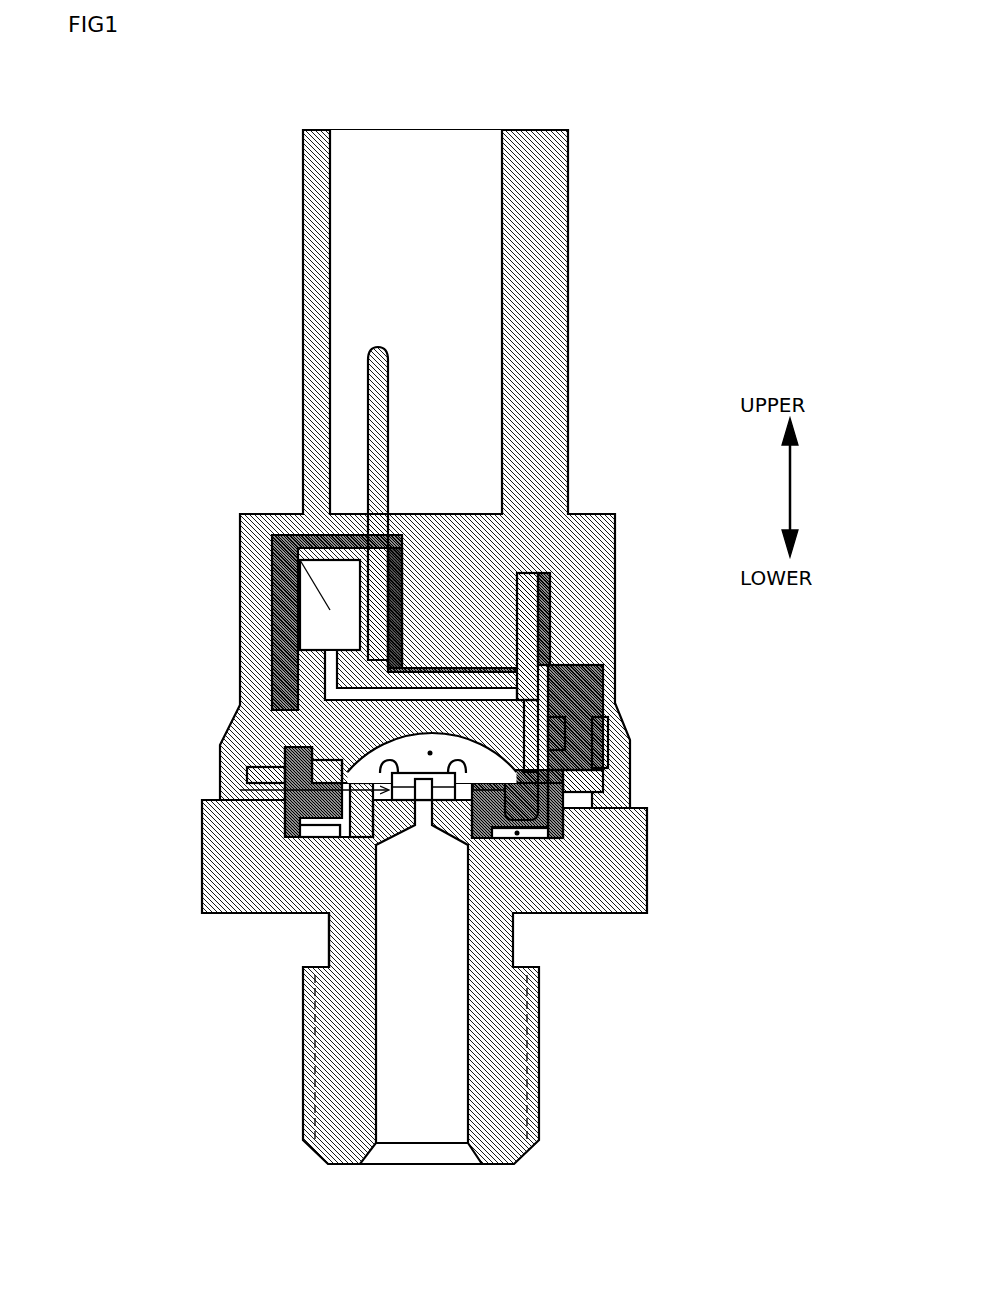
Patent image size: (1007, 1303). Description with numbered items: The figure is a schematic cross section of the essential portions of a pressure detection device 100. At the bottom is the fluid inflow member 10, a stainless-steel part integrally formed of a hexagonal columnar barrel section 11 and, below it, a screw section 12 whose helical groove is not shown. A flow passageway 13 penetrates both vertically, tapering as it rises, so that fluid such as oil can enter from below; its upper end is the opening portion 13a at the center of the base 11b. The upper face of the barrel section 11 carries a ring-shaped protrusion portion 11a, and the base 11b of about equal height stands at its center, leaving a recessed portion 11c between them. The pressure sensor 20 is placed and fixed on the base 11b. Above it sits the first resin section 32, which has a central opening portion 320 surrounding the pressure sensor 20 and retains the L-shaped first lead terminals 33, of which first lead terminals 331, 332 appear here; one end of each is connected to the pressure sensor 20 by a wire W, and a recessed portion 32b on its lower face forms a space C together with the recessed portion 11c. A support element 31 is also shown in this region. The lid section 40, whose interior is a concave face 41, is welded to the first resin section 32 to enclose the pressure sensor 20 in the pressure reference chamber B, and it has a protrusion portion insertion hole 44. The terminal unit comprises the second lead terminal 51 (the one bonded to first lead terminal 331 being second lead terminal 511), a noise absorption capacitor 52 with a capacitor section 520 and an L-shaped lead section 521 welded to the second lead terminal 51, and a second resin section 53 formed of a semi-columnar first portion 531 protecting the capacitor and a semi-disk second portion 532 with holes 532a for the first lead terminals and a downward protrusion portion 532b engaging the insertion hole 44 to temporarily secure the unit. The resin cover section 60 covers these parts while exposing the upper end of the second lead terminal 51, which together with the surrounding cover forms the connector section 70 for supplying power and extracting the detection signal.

The pressure detection device 100 is at (440, 629).
The fluid inflow member 10 is at (402, 981).
The barrel section 11 is at (220, 870).
The protrusion portion 11a is at (300, 806).
The base 11b is at (478, 900).
The recessed portion 11c is at (268, 815).
The screw section 12 is at (310, 1030).
The flow passageway 13 is at (470, 1045).
The opening portion 13a is at (430, 753).
The pressure sensor 20 is at (255, 772).
The support member 31 is at (608, 778).
The first resin section 32 is at (518, 833).
The recessed portion 32b is at (325, 915).
The first lead terminal 33 is at (426, 655).
The first lead terminal 331 is at (545, 625).
The first lead terminal 332 is at (290, 750).
The opening portion 320 is at (605, 667).
The lid section 40 is at (447, 733).
The concave face 41 is at (518, 871).
The protrusion portion insertion hole 44 is at (605, 722).
The second lead terminal 51 is at (545, 471).
The second lead terminal 511 is at (392, 455).
The noise absorption capacitor 52 is at (317, 581).
The capacitor section 520 is at (333, 537).
The lead section 521 is at (330, 612).
The second resin section 53 is at (328, 506).
The first portion 531 is at (366, 597).
The second portion 532 is at (395, 555).
The holes 532a is at (548, 640).
The protrusion portion 532b is at (608, 740).
The resin cover section 60 is at (477, 429).
The connector section 70 is at (463, 152).
The wire W is at (292, 692).
The pressure reference chamber B is at (355, 838).
The space C is at (455, 815).